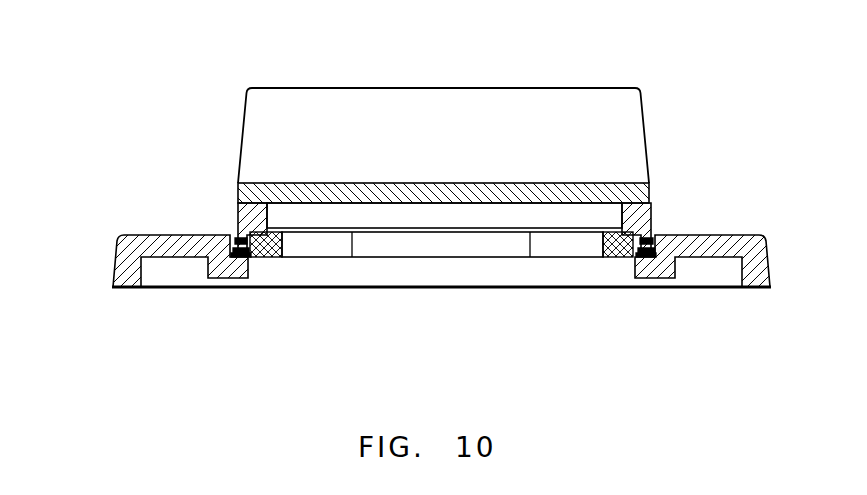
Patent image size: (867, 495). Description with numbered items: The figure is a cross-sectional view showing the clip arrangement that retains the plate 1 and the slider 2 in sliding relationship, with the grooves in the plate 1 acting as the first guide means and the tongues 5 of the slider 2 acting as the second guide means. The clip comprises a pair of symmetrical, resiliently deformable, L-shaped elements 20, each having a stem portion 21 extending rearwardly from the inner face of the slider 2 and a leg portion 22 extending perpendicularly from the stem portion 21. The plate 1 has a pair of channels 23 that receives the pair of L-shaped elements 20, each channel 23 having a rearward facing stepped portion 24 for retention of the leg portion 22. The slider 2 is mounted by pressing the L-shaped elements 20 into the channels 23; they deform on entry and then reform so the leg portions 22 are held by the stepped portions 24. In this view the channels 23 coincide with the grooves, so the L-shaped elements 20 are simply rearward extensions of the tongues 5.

The plate 1 is at (121, 288).
The slider 2 is at (241, 190).
The tongue 5 is at (237, 238).
The L-shaped element 20 is at (241, 258).
The stem portion 21 is at (234, 240).
The leg portion 22 is at (245, 258).
The channel 23 is at (236, 256).
The stepped portion 24 is at (272, 258).